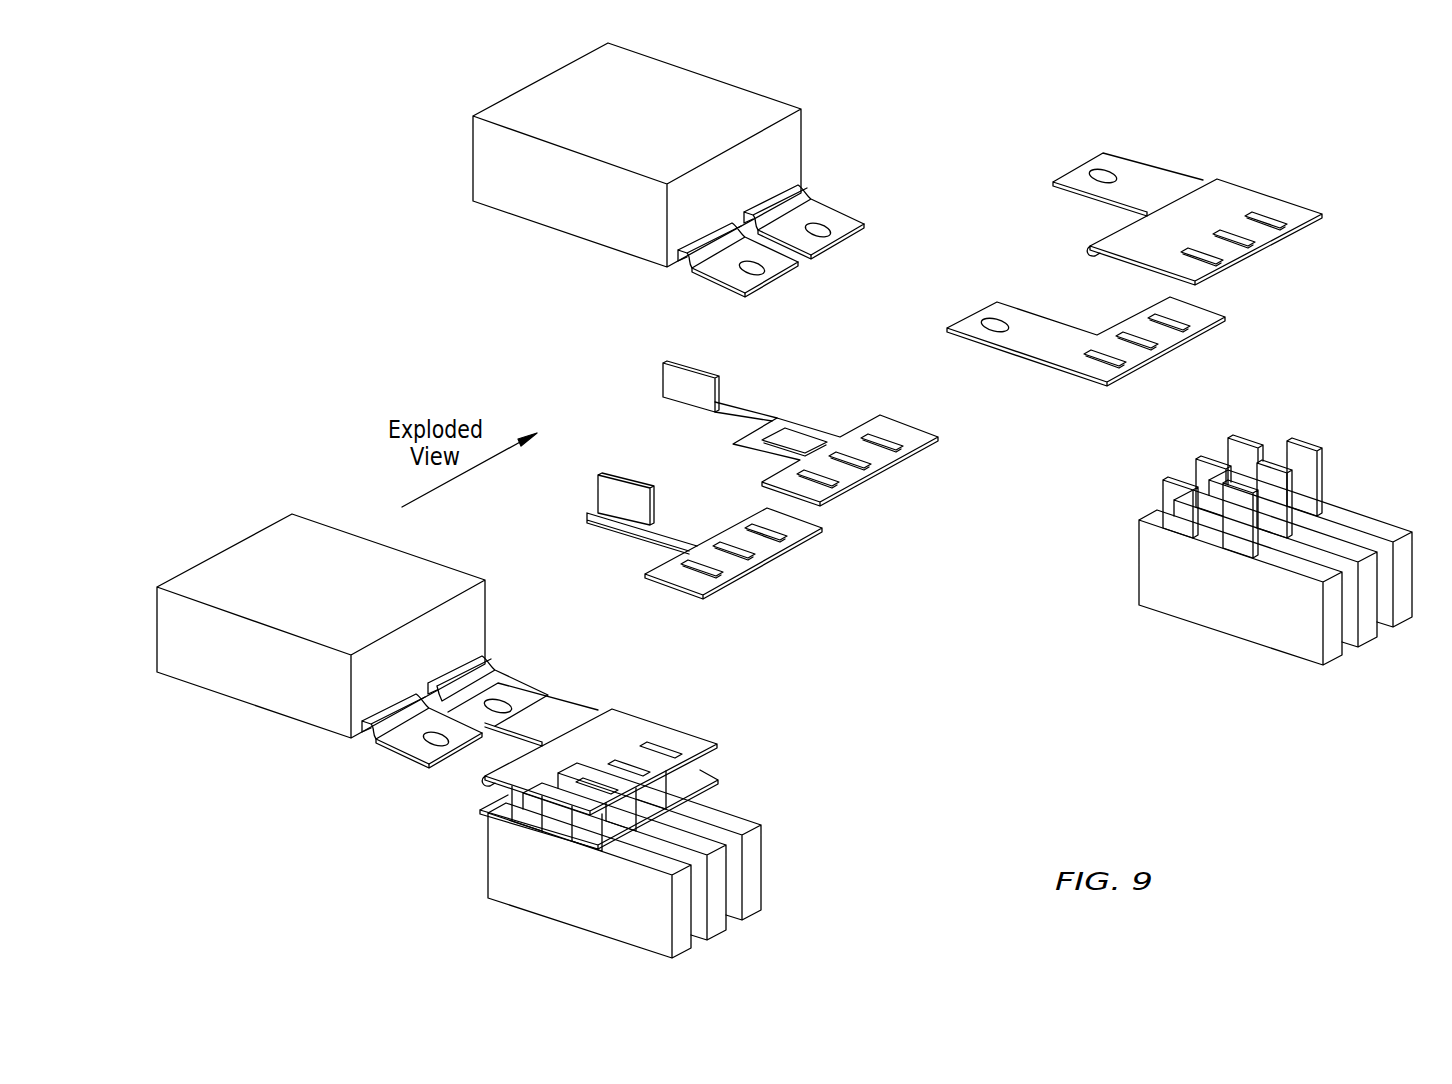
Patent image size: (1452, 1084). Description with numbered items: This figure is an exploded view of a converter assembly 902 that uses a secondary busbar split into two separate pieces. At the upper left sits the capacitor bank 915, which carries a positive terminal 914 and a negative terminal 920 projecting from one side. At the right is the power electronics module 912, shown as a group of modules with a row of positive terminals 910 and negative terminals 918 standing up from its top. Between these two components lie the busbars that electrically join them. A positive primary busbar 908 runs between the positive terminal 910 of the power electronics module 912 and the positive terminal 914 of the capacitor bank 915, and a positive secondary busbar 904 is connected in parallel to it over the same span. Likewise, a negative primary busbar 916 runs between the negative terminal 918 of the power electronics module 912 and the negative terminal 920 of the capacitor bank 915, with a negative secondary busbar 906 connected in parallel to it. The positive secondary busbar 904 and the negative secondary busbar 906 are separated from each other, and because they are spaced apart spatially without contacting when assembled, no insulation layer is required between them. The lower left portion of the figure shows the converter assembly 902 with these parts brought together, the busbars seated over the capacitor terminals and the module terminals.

The converter assembly 902 is at (305, 793).
The positive secondary busbar 904 is at (833, 496).
The negative secondary busbar 906 is at (718, 588).
The positive primary busbar 908 is at (1250, 188).
The positive terminal 910 is at (1330, 480).
The power electronics module 912 is at (1190, 623).
The positive terminal 914 is at (837, 240).
The capacitor bank 915 is at (505, 212).
The negative primary busbar 916 is at (1065, 372).
The negative terminal 918 is at (1160, 488).
The negative terminal 920 is at (768, 282).